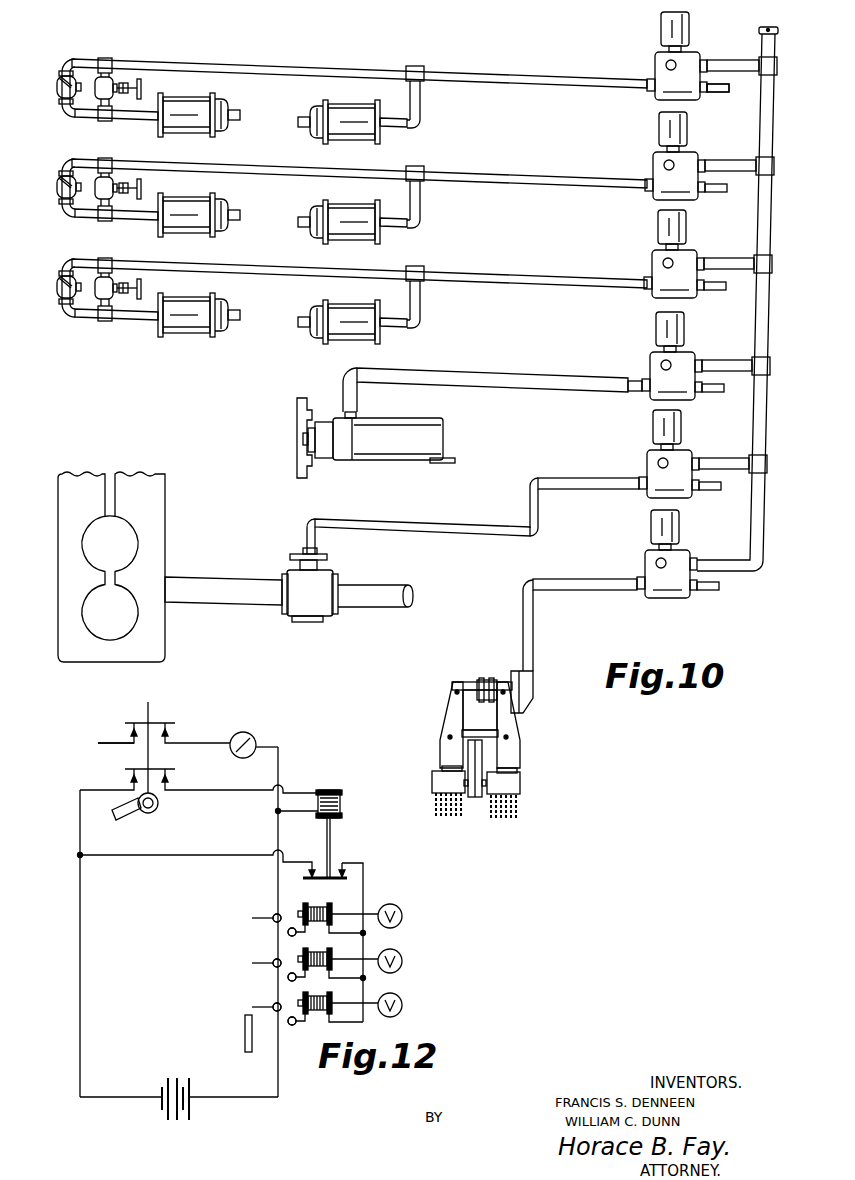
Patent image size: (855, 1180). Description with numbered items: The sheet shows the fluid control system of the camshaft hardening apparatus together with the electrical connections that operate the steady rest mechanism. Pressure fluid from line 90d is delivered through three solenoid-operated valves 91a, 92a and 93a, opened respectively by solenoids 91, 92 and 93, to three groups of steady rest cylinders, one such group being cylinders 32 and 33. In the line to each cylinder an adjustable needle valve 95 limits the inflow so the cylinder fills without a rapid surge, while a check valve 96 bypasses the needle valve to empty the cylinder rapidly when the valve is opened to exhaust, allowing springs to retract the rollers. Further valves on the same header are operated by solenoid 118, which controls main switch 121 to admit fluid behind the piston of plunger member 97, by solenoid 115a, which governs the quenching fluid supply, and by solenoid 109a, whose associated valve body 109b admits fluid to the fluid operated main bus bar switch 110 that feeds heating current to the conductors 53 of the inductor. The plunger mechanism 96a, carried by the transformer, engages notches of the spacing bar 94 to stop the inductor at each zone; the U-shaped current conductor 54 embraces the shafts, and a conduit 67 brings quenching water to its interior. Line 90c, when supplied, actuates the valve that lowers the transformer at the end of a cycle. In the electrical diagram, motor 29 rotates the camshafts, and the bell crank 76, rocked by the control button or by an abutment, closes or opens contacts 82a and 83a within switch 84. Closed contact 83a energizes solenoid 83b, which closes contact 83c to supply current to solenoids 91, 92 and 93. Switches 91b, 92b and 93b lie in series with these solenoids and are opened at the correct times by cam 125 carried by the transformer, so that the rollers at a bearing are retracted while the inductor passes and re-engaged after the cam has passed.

In FIG. 10, the cylinder 32 is at (205, 98).
In FIG. 10, the cylinder 33 is at (367, 103).
In FIG. 10, the adjustable needle valve 95 is at (104, 192).
In FIG. 10, the check valve 96 is at (57, 94).
In FIG. 10, the solenoid 91 is at (678, 27).
In FIG. 12, the solenoid 91 is at (320, 906).
In FIG. 10, the valve 91a is at (668, 82).
In FIG. 12, the valve 91a is at (402, 918).
In FIG. 10, the solenoid 92 is at (678, 127).
In FIG. 12, the solenoid 92 is at (320, 951).
In FIG. 10, the valve 92a is at (657, 163).
In FIG. 12, the valve 92a is at (402, 963).
In FIG. 10, the solenoid 93 is at (676, 227).
In FIG. 12, the solenoid 93 is at (320, 995).
In FIG. 10, the valve 93a is at (653, 266).
In FIG. 12, the valve 93a is at (402, 1007).
In FIG. 10, the line 90c is at (716, 92).
In FIG. 10, the line 90d is at (733, 64).
In FIG. 10, the main switch 121 is at (654, 327).
In FIG. 10, the solenoid 118 is at (656, 397).
In FIG. 10, the solenoid 115a is at (653, 433).
In FIG. 10, the solenoid 109a is at (650, 530).
In FIG. 10, the valve 109b is at (661, 595).
In FIG. 10, the plunger mechanism 96a is at (420, 432).
In FIG. 10, the spacing bar 94 is at (297, 435).
In FIG. 10, the plunger member 97 is at (311, 456).
In FIG. 10, the U-shaped current conductor 54 is at (56, 612).
In FIG. 10, the conduit 67 is at (237, 585).
In FIG. 10, the fluid operated main bus bar switch 110 is at (442, 752).
In FIG. 10, the conductors 53 is at (436, 805).
In FIG. 12, the contact 82a is at (160, 723).
In FIG. 12, the contact 83a is at (160, 769).
In FIG. 12, the switch 84 is at (135, 748).
In FIG. 12, the motor 29 is at (255, 737).
In FIG. 12, the bell crank 76 is at (158, 803).
In FIG. 12, the solenoid 83b is at (343, 801).
In FIG. 12, the contact 83c is at (333, 873).
In FIG. 12, the switch 91b is at (275, 915).
In FIG. 12, the switch 92b is at (275, 960).
In FIG. 12, the switch 93b is at (275, 1003).
In FIG. 12, the cam 125 is at (244, 1032).